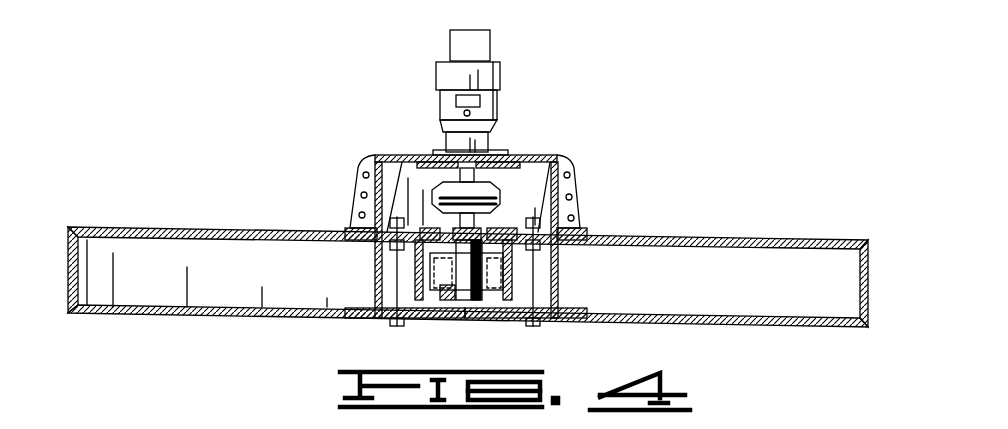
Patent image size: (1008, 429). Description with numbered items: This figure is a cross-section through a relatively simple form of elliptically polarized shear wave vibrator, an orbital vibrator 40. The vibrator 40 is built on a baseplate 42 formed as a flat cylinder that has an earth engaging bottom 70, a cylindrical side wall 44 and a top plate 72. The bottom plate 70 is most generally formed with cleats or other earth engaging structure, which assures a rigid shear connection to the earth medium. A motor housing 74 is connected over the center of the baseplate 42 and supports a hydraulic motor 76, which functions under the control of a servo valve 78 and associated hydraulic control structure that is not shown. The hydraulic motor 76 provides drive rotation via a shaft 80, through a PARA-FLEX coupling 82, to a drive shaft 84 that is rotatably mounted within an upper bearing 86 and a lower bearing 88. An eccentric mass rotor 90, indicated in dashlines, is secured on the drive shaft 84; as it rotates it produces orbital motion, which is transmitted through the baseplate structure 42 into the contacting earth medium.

The orbital vibrator 40 is at (630, 82).
The baseplate 42 is at (499, 276).
The cylindrical side wall 44 is at (870, 270).
The earth engaging bottom 70 is at (697, 325).
The top plate 72 is at (742, 238).
The motor housing 74 is at (557, 157).
The hydraulic motor 76 is at (497, 73).
The servo valve 78 is at (477, 52).
The shaft 80 is at (475, 165).
The PARA-FLEX coupling 82 is at (482, 195).
The drive shaft 84 is at (438, 232).
The upper bearing 86 is at (505, 258).
The lower bearing 88 is at (425, 320).
The eccentric mass rotor 90 is at (507, 322).